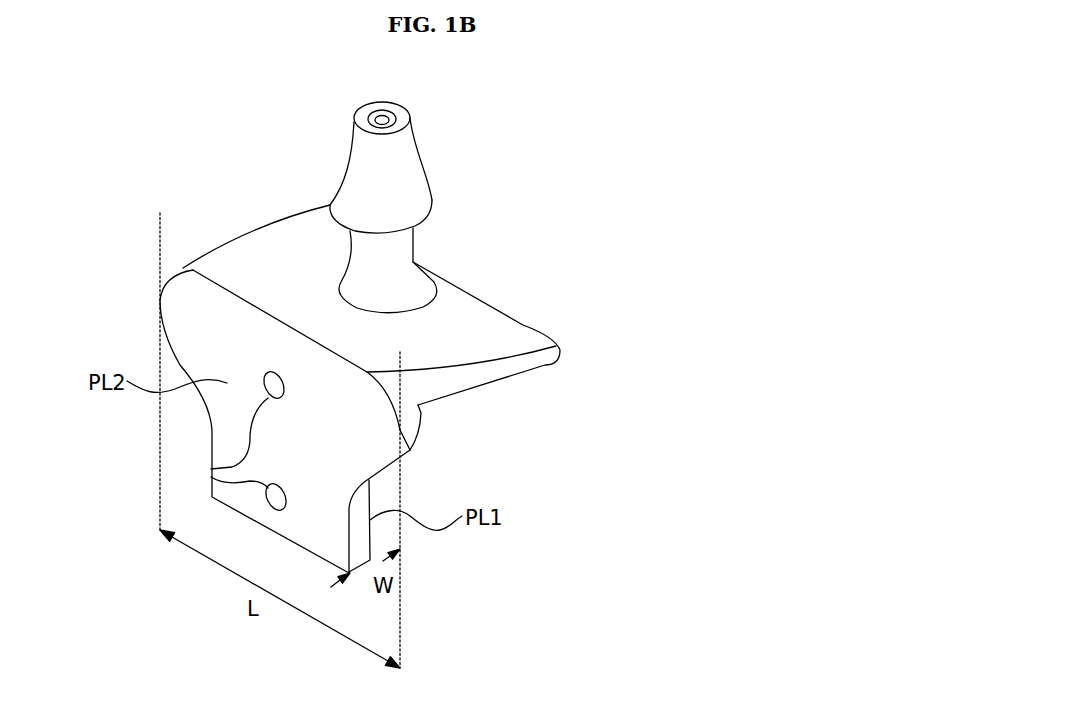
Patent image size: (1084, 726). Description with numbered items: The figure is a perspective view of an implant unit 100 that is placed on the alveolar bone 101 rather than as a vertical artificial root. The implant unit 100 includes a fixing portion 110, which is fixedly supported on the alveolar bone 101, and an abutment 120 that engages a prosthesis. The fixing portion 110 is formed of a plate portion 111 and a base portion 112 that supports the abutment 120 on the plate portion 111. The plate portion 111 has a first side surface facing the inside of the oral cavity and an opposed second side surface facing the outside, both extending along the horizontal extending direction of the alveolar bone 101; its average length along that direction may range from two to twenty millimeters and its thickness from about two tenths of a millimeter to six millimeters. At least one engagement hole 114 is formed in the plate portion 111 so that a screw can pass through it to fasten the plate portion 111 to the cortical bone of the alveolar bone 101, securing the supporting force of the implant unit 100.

The implant unit 100 is at (718, 97).
The fixing portion 110 is at (655, 311).
The plate portion 111 is at (385, 441).
The base portion 112 is at (515, 331).
The engagement hole 114 is at (212, 469).
The abutment 120 is at (453, 213).
The alveolar bone 101 is at (366, 351).